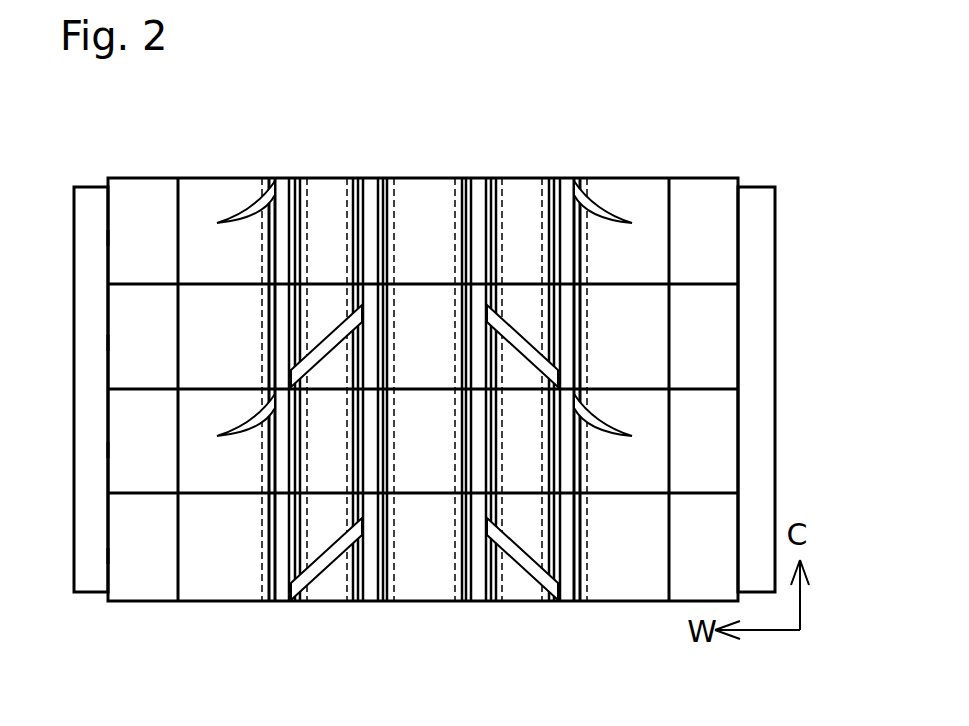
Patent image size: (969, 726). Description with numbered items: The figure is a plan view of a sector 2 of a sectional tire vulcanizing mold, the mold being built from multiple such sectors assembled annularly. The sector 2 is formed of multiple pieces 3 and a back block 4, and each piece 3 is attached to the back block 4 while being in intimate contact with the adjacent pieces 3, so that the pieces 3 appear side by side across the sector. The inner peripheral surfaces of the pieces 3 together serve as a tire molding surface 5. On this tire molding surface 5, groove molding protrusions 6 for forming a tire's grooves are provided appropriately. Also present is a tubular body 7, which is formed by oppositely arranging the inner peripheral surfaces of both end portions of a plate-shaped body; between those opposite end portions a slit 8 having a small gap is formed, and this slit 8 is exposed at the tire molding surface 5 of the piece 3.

The sector 2 is at (652, 172).
The piece 3 is at (96, 248).
The back block 4 is at (96, 208).
The tire molding surface 5 is at (215, 192).
The groove molding protrusion 6 is at (283, 180).
The tubular body 7 is at (303, 180).
The slit 8 is at (266, 605).